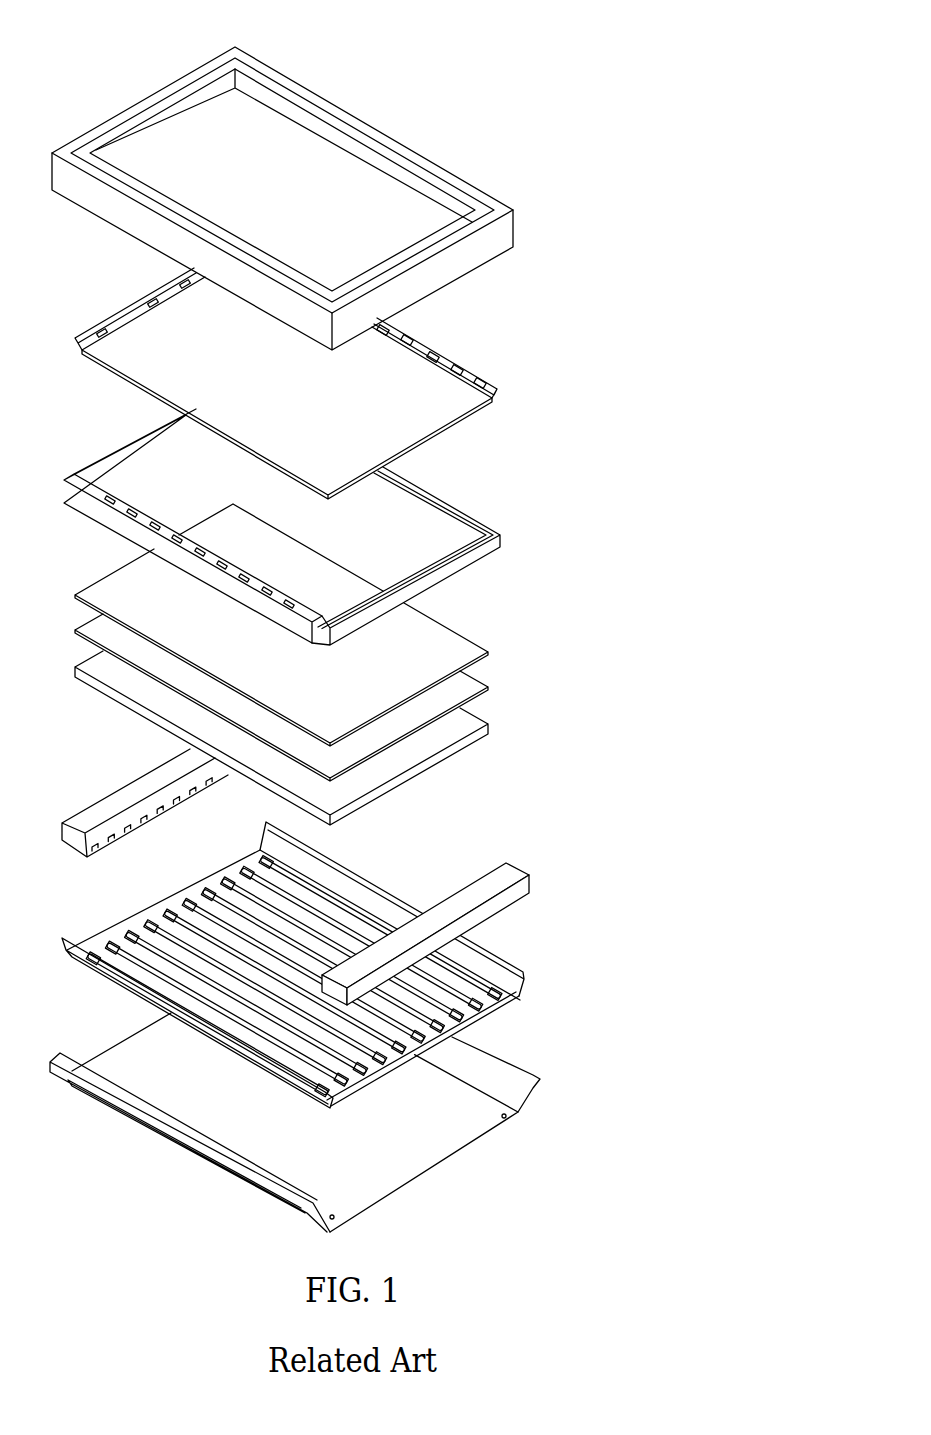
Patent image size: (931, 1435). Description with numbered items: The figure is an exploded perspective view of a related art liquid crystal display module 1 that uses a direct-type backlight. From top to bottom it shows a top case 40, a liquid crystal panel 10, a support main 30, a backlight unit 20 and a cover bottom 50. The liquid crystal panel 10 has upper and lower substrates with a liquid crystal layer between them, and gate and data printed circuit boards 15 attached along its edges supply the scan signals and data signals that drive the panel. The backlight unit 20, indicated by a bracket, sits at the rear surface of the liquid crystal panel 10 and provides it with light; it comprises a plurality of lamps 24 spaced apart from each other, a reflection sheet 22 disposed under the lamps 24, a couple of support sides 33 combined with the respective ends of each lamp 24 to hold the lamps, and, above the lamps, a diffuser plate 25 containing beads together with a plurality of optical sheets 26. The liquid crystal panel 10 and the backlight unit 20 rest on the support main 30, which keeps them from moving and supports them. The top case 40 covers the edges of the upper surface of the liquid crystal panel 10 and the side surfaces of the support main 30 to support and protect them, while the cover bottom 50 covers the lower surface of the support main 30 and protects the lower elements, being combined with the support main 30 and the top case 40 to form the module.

The LCD module 1 is at (553, 107).
The top case 40 is at (510, 231).
The liquid crystal panel 10 is at (430, 385).
The gate and data printed circuit boards 15 is at (498, 376).
The support main 30 is at (493, 528).
The optical sheets 26 is at (505, 652).
The diffuser plate 25 is at (487, 725).
The backlight unit 20 is at (615, 670).
The lamps 24 is at (333, 897).
The support sides 33 is at (508, 878).
The reflection sheet 22 is at (487, 960).
The cover bottom 50 is at (523, 1072).